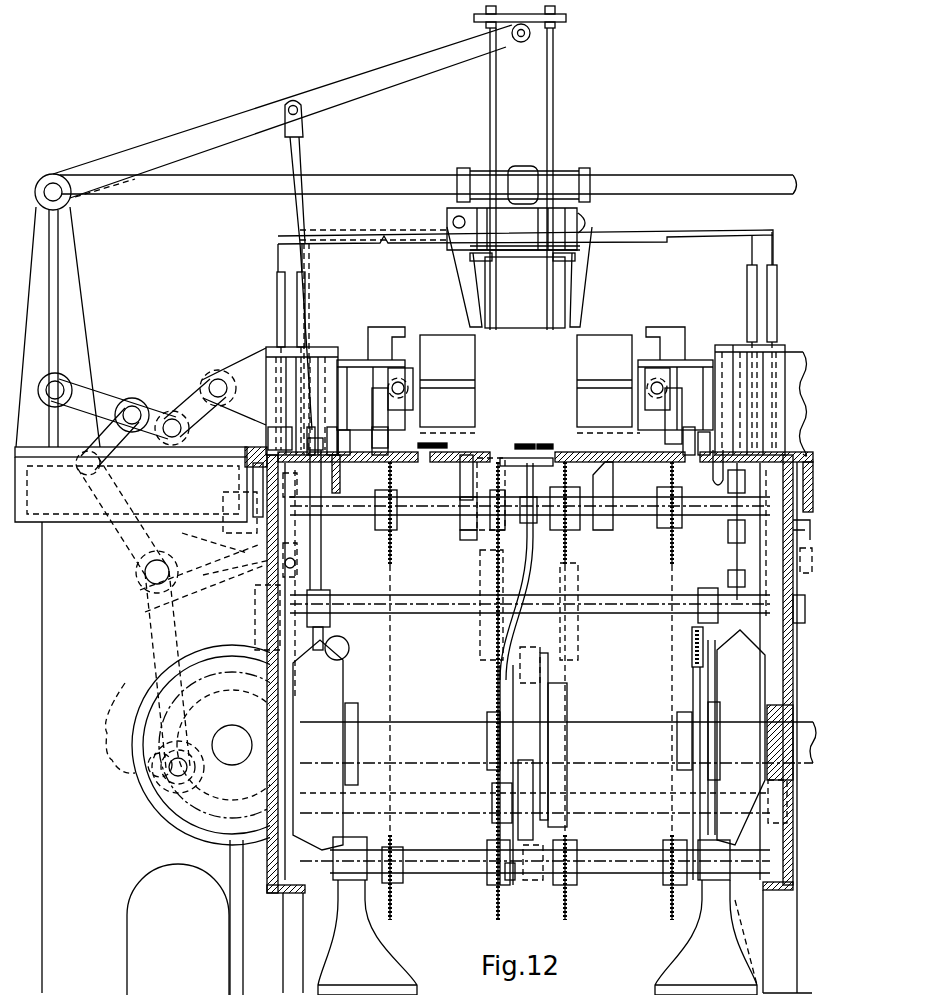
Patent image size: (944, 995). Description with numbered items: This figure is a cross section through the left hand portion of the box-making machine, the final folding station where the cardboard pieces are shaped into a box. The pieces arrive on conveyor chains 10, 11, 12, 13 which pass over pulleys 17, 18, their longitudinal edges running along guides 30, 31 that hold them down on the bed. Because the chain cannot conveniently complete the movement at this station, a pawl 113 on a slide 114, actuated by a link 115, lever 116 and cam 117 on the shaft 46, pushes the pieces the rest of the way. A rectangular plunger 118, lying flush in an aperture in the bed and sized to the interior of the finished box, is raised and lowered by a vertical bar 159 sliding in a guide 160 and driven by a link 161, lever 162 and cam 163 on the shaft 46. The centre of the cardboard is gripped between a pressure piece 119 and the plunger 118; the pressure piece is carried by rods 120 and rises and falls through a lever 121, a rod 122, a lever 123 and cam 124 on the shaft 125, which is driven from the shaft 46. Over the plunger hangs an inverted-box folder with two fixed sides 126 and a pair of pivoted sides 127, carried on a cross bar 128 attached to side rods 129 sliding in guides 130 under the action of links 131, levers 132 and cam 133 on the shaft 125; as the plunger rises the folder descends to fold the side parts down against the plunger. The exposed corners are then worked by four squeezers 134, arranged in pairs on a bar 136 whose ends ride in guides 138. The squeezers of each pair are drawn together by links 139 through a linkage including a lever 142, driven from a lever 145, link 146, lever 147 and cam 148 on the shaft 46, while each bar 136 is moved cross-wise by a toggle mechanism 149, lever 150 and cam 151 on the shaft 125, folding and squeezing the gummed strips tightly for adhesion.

The conveyor chain 10 is at (390, 660).
The conveyor chain 11 is at (497, 570).
The conveyor chain 12 is at (575, 568).
The conveyor chain 13 is at (672, 643).
The pulley 17 is at (672, 560).
The pulley 18 is at (674, 917).
The guide 30 is at (703, 432).
The guide 31 is at (548, 445).
The shaft 46 is at (622, 725).
The pawl 113 is at (527, 447).
The slide 114 is at (505, 462).
The link 115 is at (520, 480).
The lever 116 is at (497, 690).
The cam 117 is at (508, 743).
The rectangular plunger 118 is at (483, 543).
The pressure piece 119 is at (570, 256).
The rods 120 is at (547, 124).
The lever 121 is at (351, 97).
The rod 122 is at (295, 218).
The lever 123 is at (213, 528).
The cam 124 is at (122, 683).
The shaft 125 is at (232, 728).
The fixed sides 126 is at (530, 322).
The pivoted sides 127 is at (470, 320).
The cross bar 128 is at (384, 243).
The side rods 129 is at (750, 295).
The guides 130 is at (750, 345).
The links 131 is at (745, 535).
The levers 132 is at (272, 600).
The cam 133 is at (202, 835).
The squeezers 134 is at (580, 372).
The bar 136 is at (668, 340).
The guides 138 is at (672, 360).
The links 139 is at (645, 398).
The lever 142 is at (716, 464).
The lever 145 is at (270, 440).
The link 146 is at (318, 568).
The lever 147 is at (323, 617).
The cam 148 is at (697, 672).
The toggle mechanism 149 is at (183, 405).
The lever 150 is at (123, 545).
The cam 151 is at (163, 808).
The vertical bar 159 is at (560, 673).
The guide 160 is at (580, 630).
The link 161 is at (565, 744).
The lever 162 is at (520, 822).
The cam 163 is at (542, 697).